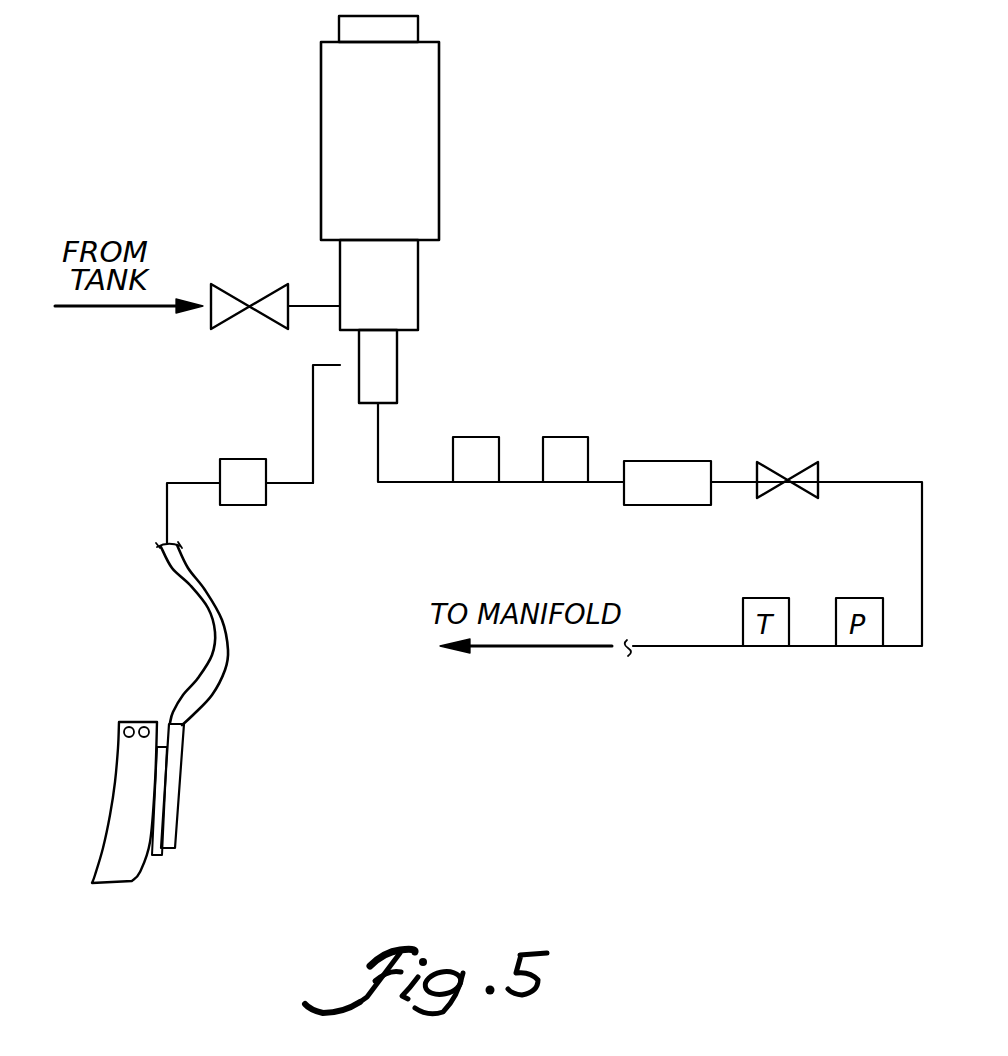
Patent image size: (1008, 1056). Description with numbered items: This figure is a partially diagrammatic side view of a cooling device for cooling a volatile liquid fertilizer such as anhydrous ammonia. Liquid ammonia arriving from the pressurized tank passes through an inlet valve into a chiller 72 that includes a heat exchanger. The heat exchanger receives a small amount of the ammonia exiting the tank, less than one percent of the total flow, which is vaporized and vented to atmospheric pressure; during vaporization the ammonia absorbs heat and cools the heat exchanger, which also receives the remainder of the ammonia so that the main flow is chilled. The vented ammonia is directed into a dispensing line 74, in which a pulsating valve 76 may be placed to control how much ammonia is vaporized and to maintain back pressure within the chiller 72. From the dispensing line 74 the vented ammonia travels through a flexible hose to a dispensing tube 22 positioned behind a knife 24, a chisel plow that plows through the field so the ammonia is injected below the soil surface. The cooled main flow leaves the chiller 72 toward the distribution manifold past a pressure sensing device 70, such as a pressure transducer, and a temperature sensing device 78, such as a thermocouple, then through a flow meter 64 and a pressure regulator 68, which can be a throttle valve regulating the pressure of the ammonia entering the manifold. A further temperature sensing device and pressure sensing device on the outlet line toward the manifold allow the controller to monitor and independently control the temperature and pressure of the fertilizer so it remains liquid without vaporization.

The chiller 72 is at (427, 128).
The dispensing line 74 is at (313, 424).
The pulsating valve 76 is at (266, 490).
The pressure sensing device 70 is at (494, 398).
The temperature sensing device 78 is at (583, 398).
The flow meter 64 is at (675, 461).
The pressure regulator 68 is at (758, 462).
The dispensing tube 22 is at (172, 803).
The knife 24 is at (118, 800).